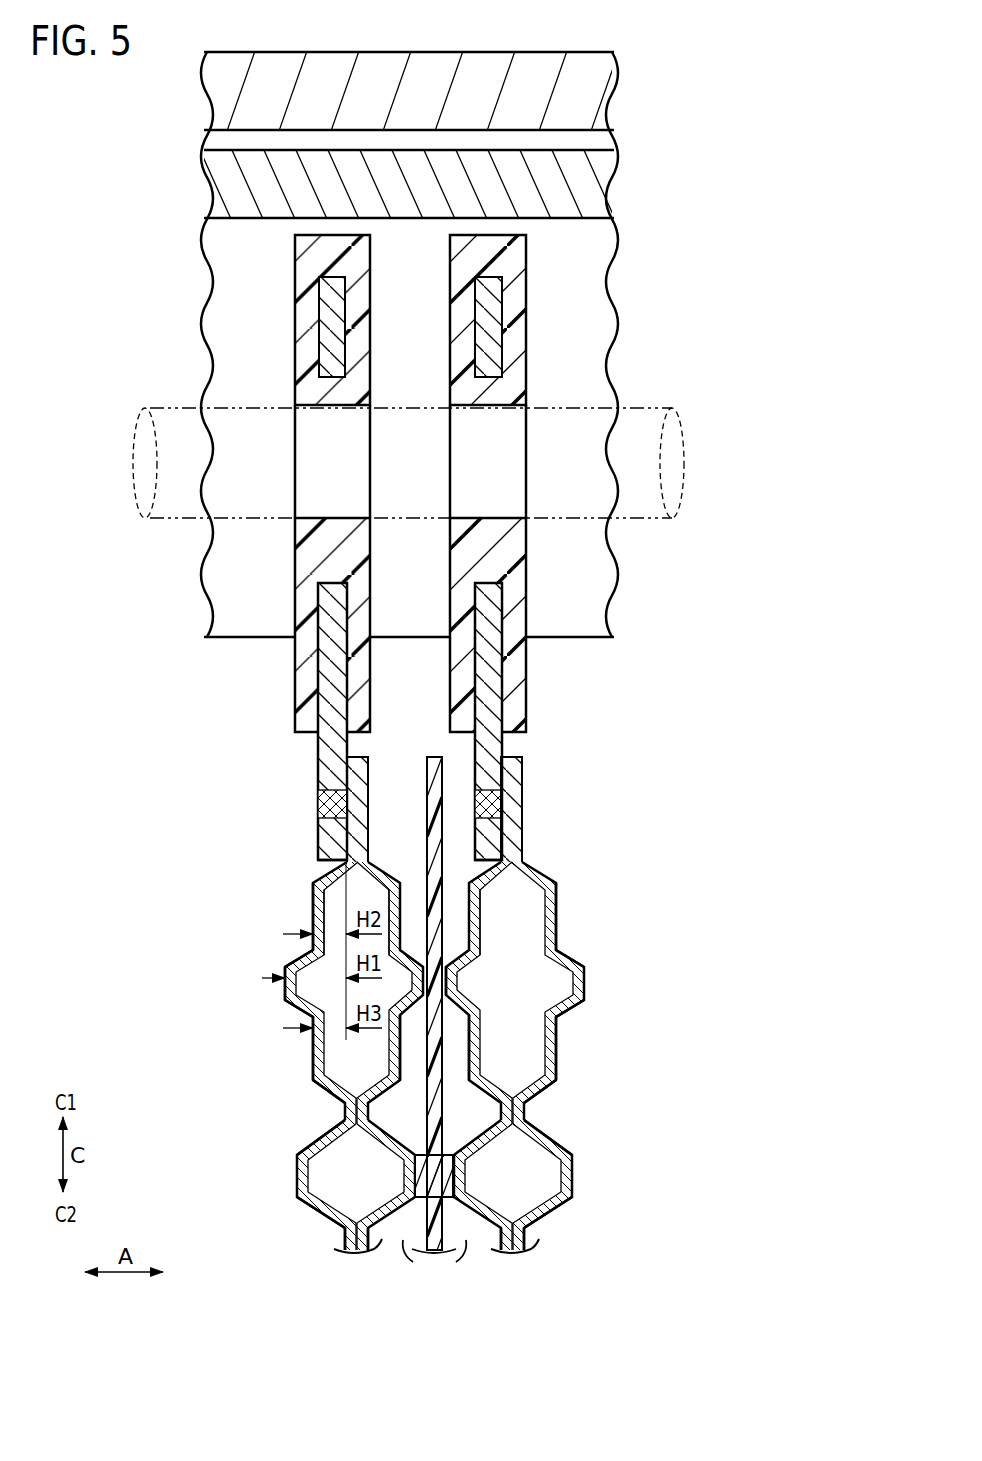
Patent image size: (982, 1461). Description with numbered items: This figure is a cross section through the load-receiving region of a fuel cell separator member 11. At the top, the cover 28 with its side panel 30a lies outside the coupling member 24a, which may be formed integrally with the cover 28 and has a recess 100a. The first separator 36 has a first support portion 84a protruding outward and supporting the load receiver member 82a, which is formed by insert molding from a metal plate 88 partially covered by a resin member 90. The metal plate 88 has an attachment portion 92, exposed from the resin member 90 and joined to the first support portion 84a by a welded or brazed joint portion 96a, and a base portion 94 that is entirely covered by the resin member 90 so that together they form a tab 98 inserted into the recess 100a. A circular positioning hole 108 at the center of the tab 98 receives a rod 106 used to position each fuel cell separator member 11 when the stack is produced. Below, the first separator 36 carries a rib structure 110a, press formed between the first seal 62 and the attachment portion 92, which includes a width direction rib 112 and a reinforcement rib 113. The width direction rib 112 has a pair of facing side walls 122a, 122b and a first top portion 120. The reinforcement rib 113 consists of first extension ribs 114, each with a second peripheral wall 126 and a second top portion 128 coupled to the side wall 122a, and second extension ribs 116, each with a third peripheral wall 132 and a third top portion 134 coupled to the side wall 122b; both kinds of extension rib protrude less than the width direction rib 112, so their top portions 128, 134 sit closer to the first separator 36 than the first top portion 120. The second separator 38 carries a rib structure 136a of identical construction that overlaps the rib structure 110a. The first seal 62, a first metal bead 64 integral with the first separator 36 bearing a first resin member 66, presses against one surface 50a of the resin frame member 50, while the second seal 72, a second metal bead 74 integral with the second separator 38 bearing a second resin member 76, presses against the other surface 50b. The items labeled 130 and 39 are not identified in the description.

The cover 28 is at (406, 341).
The side panel 30a is at (600, 95).
The coupling member 24a is at (598, 182).
The recess 100a is at (212, 525).
The rod 106 is at (655, 408).
The load receiver member 82a is at (412, 477).
The positioning hole 108 is at (318, 478).
The fuel cell separator member 11 is at (288, 617).
The metal plate 88 is at (413, 319).
The resin member 90 is at (305, 325).
The base portion 94 is at (312, 350).
The tab 98 is at (413, 327).
The attachment portion 92 is at (432, 727).
The joint portion 96a is at (336, 808).
The end face 130 is at (322, 868).
The first support portion 84a is at (352, 767).
The reinforcement rib 113 is at (434, 1022).
The first extension rib 114 is at (436, 1022).
The second peripheral wall 126 is at (330, 890).
The second top portion 128 is at (389, 900).
The rib structure 136a is at (355, 797).
The side wall 122a is at (377, 946).
The first top portion 120 is at (290, 991).
The width direction rib 112 is at (464, 986).
The second extension rib 116 is at (419, 1065).
The side wall 122b is at (312, 1045).
The third top portion 134 is at (389, 1052).
The third peripheral wall 132 is at (355, 1095).
The second seal 72 is at (310, 1185).
The second metal bead 74 is at (375, 1152).
The second resin member 76 is at (400, 1190).
The first seal 62 is at (559, 1185).
The first metal bead 64 is at (495, 1152).
The first resin member 66 is at (470, 1190).
The end portion 39 is at (441, 1261).
The first separator 36 is at (348, 1236).
The second separator 38 is at (373, 1256).
The resin frame member 50 is at (522, 1044).
The one surface of the resin frame member 50a is at (448, 1228).
The another surface of the resin frame member 50b is at (422, 1228).
The rib structure 110a is at (465, 966).